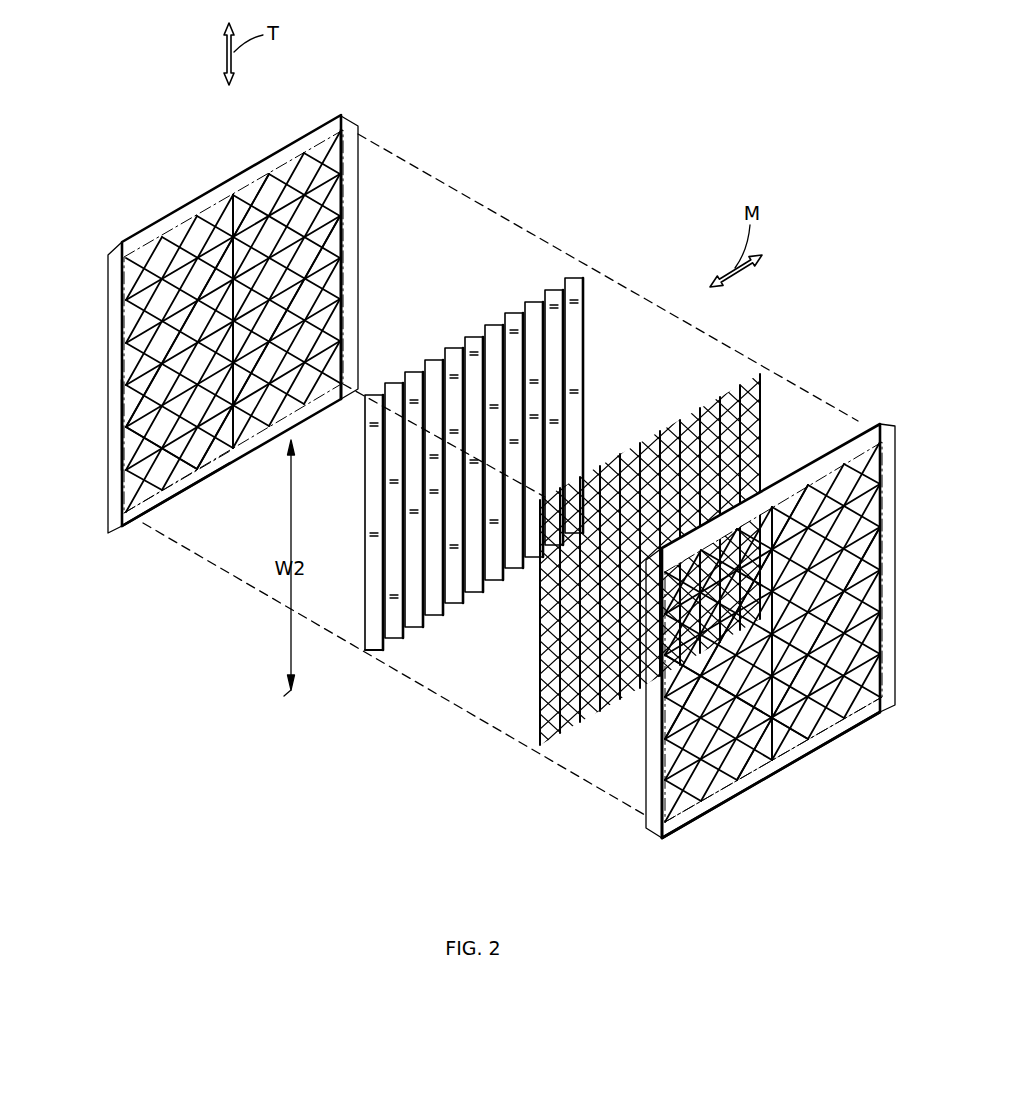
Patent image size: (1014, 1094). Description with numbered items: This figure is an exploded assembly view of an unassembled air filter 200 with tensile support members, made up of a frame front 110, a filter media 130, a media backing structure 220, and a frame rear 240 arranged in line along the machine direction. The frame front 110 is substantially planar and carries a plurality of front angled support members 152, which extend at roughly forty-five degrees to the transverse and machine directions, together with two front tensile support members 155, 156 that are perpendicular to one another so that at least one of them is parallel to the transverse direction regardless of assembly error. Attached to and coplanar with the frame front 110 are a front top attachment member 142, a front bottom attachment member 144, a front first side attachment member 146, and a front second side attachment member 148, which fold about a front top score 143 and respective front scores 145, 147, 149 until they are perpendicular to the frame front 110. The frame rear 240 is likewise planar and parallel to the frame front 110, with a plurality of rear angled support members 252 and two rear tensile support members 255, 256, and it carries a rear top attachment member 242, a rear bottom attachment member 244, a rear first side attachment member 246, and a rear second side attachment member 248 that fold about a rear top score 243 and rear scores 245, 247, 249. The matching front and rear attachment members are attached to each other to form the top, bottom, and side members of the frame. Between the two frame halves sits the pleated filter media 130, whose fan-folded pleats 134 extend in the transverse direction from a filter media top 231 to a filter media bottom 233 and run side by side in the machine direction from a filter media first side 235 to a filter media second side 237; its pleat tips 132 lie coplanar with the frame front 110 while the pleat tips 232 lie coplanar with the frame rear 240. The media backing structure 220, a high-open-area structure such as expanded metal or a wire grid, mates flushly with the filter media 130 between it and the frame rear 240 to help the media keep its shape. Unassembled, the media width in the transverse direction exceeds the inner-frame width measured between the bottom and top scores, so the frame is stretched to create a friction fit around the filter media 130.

The unassembled air filter 200 is at (678, 126).
The frame front 110 is at (725, 634).
The filter media 130 is at (487, 498).
The pleat tips 132 is at (432, 600).
The pleats 134 is at (490, 562).
The front top attachment member 142 is at (841, 449).
The front top score 143 is at (808, 492).
The front bottom attachment member 144 is at (793, 758).
The front bottom score 145 is at (850, 708).
The front first side attachment member 146 is at (652, 715).
The front first side score 147 is at (680, 762).
The front second side attachment member 148 is at (889, 663).
The front second side score 149 is at (855, 622).
The front angled support members 152 is at (771, 600).
The front tensile support member 155 is at (802, 584).
The front tensile support member 156 is at (789, 640).
The media backing structure 220 is at (742, 385).
The filter media top 231 is at (457, 345).
The pleat tips 232 is at (506, 304).
The filter media bottom 233 is at (372, 652).
The filter media first side 235 is at (366, 525).
The filter media second side 237 is at (587, 400).
The frame rear 240 is at (236, 333).
The rear top attachment member 242 is at (157, 228).
The rear top score 243 is at (203, 228).
The rear bottom attachment member 244 is at (145, 528).
The rear bottom score 245 is at (187, 478).
The rear first side attachment member 246 is at (118, 428).
The rear first side score 247 is at (124, 443).
The rear second side attachment member 248 is at (362, 126).
The rear second side score 249 is at (344, 164).
The rear angled support members 252 is at (275, 285).
The rear tensile support member 255 is at (259, 192).
The rear tensile support member 256 is at (257, 330).